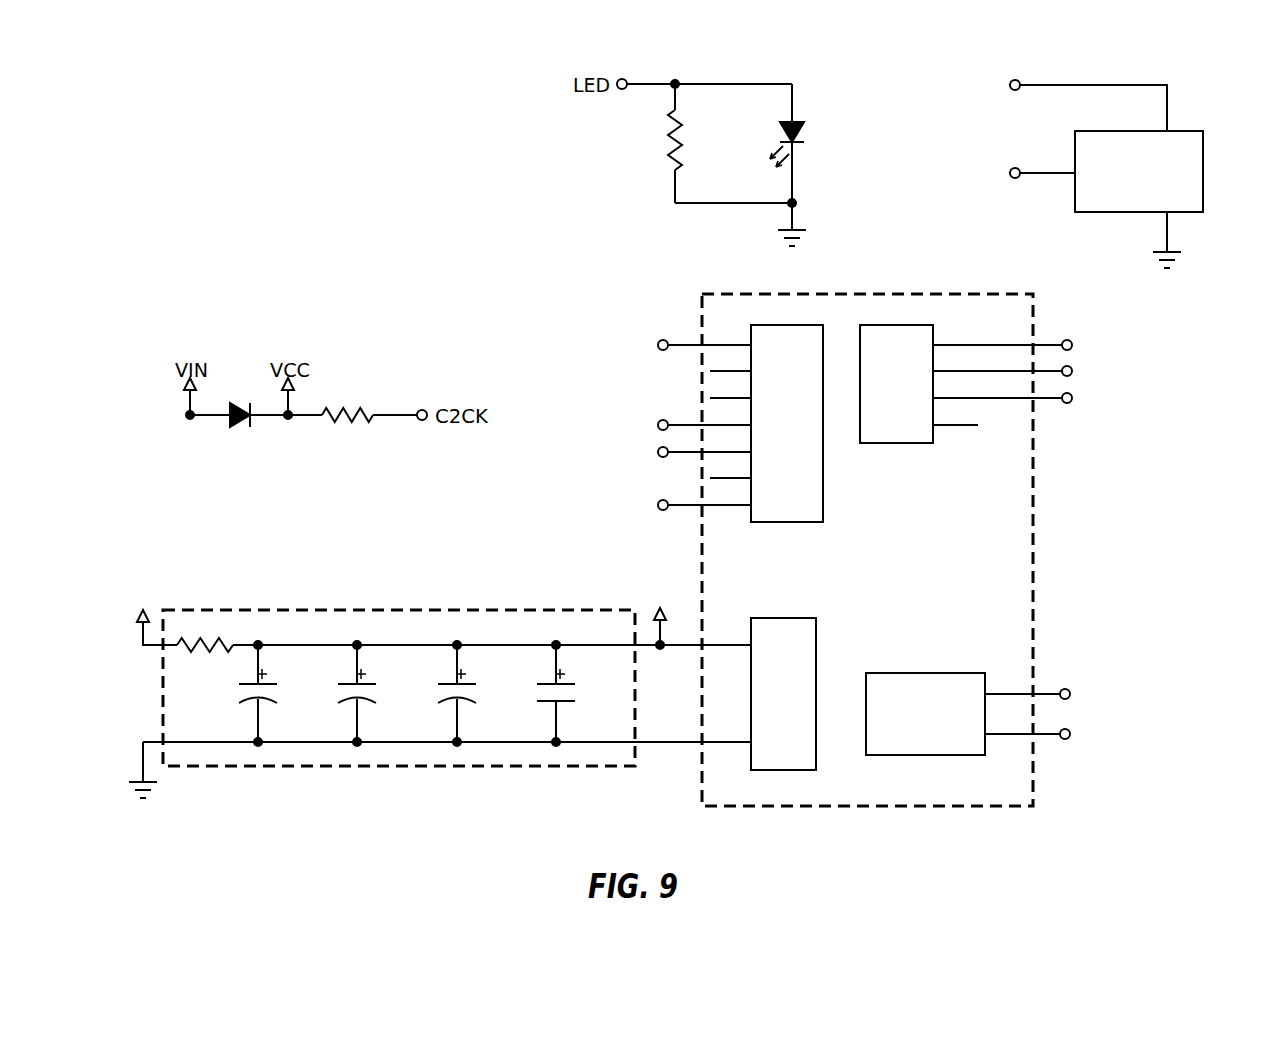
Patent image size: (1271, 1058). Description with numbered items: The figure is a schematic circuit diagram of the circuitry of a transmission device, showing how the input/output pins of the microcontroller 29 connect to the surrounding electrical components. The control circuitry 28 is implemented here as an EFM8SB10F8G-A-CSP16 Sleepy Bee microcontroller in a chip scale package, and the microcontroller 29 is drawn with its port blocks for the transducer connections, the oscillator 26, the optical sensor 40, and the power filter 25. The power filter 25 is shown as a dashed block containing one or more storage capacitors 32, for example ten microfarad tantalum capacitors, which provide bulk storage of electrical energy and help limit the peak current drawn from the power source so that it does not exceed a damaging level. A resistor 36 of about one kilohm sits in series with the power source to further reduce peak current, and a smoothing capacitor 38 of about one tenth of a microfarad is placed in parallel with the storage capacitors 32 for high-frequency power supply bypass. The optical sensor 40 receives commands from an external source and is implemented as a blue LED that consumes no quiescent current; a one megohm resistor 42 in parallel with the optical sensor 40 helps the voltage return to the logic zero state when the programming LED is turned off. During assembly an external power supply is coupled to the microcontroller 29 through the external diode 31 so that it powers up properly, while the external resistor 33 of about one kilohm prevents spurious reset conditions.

The power filter 25 is at (400, 680).
The oscillator 26 is at (1073, 140).
The control circuitry 28 is at (700, 560).
The microcontroller 29 is at (1035, 315).
The external diode 31 is at (241, 403).
The storage capacitors 32 is at (262, 702).
The external resistor 33 is at (338, 405).
The resistor 36 is at (203, 635).
The smoothing capacitor 38 is at (545, 702).
The optical sensor 40 is at (800, 120).
The resistor 42 is at (662, 147).